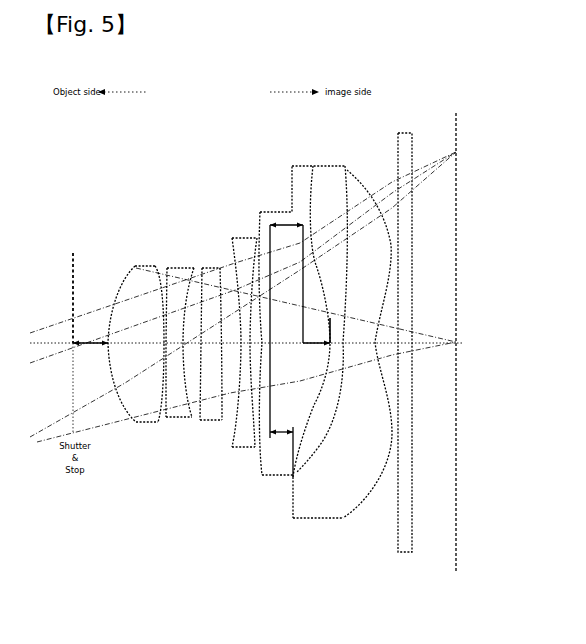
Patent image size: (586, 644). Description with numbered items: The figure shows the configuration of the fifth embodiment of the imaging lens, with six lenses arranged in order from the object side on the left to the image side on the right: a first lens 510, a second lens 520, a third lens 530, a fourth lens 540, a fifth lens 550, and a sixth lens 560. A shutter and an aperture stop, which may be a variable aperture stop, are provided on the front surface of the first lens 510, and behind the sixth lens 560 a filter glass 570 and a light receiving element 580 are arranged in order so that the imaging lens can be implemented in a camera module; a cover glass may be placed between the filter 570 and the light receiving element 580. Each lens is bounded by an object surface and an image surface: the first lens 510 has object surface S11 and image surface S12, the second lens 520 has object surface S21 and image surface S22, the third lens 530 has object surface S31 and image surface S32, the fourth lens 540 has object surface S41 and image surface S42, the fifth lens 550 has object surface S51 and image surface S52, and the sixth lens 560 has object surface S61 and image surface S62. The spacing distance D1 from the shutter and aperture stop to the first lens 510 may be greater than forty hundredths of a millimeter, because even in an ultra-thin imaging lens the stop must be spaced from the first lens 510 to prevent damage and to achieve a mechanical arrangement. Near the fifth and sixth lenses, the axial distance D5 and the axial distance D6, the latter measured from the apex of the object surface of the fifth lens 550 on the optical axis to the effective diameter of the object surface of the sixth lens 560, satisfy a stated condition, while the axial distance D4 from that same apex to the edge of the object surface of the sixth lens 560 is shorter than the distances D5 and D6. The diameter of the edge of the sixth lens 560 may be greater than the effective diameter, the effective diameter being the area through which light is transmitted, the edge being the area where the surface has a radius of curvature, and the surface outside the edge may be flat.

The first lens 510 is at (136, 334).
The second lens 520 is at (180, 332).
The third lens 530 is at (211, 333).
The fourth lens 540 is at (246, 321).
The fifth lens 550 is at (294, 329).
The sixth lens 560 is at (342, 352).
The filter glass 570 is at (405, 554).
The light receiving element 580 is at (456, 556).
The object surface of the first lens S11 is at (133, 264).
The image surface of the first lens S12 is at (155, 264).
The object surface of the second lens S21 is at (168, 266).
The image surface of the second lens S22 is at (193, 266).
The object surface of the third lens S31 is at (202, 266).
The image surface of the third lens S32 is at (220, 266).
The object surface of the fourth lens S41 is at (232, 236).
The image surface of the fourth lens S42 is at (257, 236).
The object surface of the fifth lens S51 is at (266, 240).
The image surface of the fifth lens S52 is at (313, 166).
The object surface of the sixth lens S61 is at (346, 168).
The image surface of the sixth lens S62 is at (372, 178).
The spacing distance D1 is at (90, 350).
The axial distance D4 is at (281, 426).
The axial distance D5 is at (312, 338).
The axial distance D6 is at (286, 331).